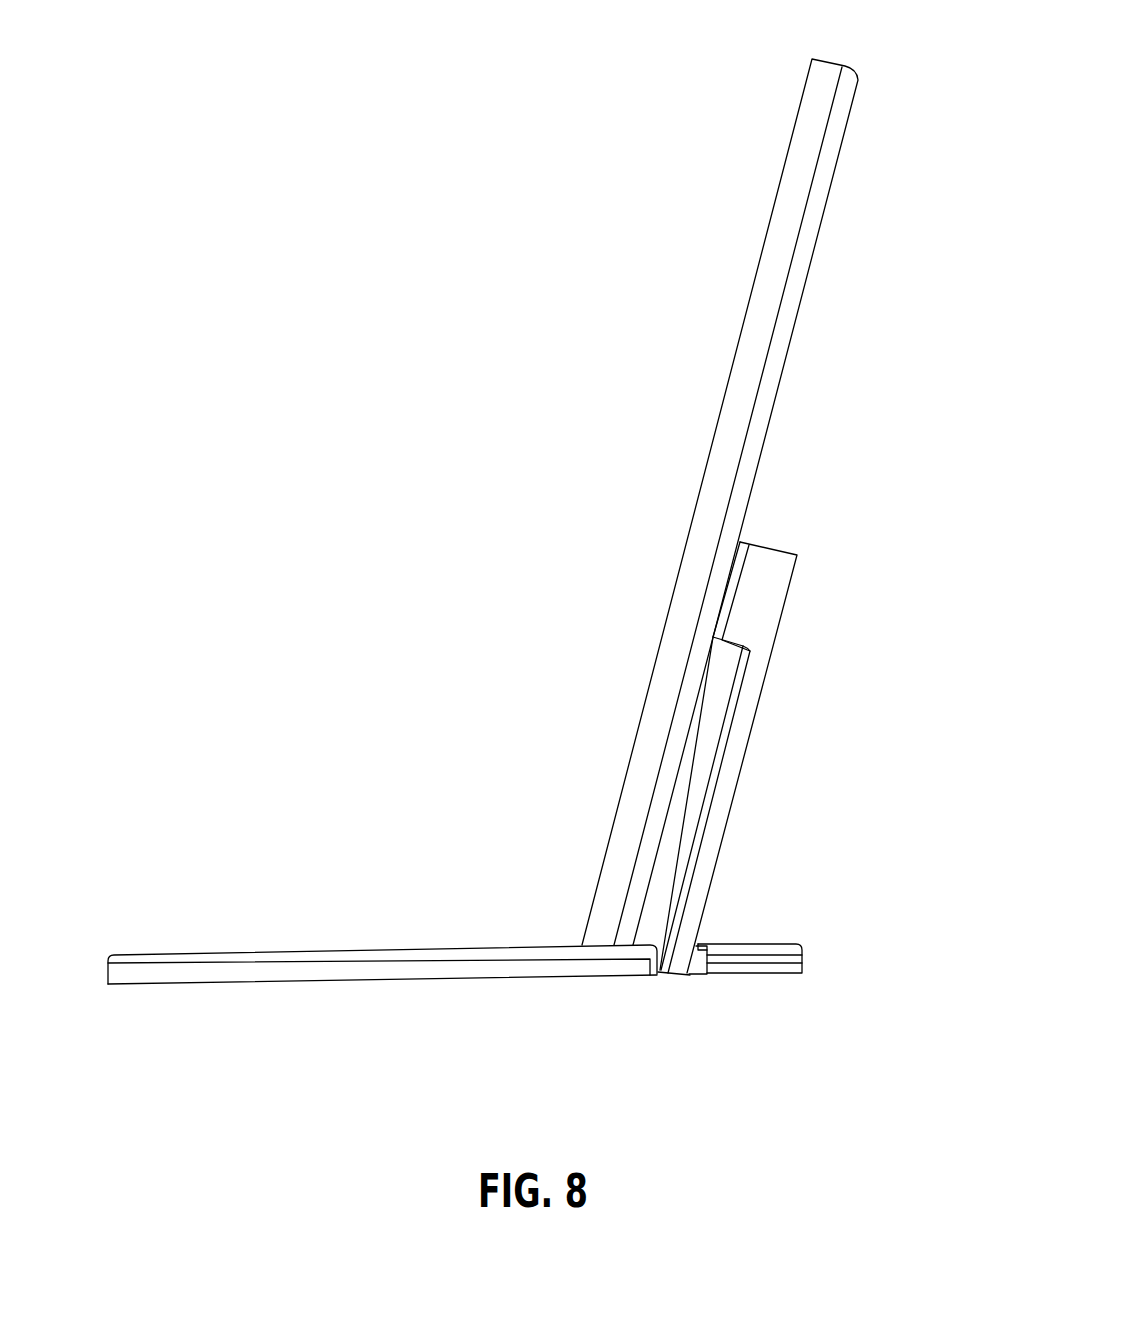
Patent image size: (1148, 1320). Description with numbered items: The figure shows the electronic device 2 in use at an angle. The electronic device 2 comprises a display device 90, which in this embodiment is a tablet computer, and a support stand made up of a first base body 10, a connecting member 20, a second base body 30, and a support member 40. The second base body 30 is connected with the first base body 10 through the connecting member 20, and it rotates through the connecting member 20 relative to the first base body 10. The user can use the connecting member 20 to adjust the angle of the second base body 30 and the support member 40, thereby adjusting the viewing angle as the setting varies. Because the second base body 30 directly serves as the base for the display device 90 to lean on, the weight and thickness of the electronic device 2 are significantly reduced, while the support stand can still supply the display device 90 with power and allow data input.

The electronic device 2 is at (385, 134).
The first base body 10 is at (213, 957).
The connecting member 20 is at (705, 975).
The second base body 30 is at (722, 783).
The support member 40 is at (780, 955).
The display device 90 is at (728, 453).